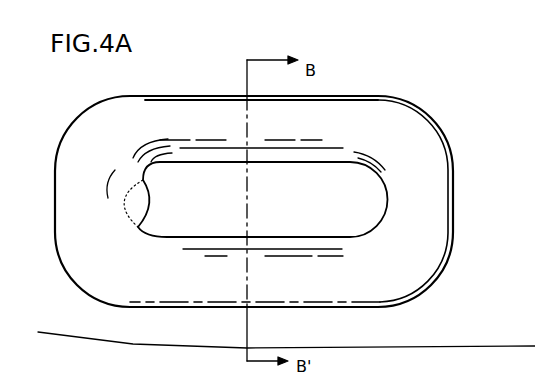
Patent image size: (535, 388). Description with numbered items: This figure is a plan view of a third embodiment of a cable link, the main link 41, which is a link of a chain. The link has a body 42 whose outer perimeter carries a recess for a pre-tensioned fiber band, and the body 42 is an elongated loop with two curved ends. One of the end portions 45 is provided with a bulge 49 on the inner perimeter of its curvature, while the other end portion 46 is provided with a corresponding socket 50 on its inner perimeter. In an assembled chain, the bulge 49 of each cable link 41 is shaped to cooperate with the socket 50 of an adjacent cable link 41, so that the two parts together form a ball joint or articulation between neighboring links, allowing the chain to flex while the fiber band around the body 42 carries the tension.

The main link 41 is at (188, 108).
The body 42 is at (415, 262).
The end portion 45 is at (78, 147).
The end portion 46 is at (413, 155).
The bulge 49 is at (147, 190).
The socket 50 is at (378, 190).